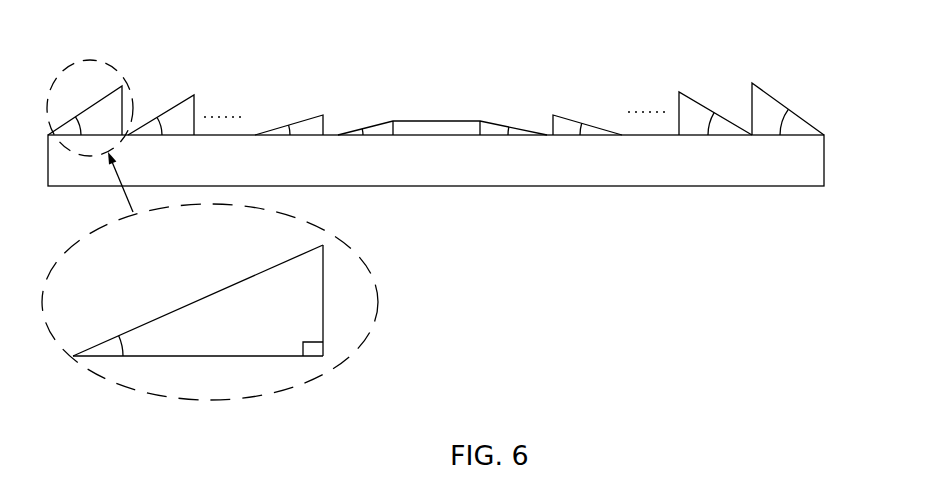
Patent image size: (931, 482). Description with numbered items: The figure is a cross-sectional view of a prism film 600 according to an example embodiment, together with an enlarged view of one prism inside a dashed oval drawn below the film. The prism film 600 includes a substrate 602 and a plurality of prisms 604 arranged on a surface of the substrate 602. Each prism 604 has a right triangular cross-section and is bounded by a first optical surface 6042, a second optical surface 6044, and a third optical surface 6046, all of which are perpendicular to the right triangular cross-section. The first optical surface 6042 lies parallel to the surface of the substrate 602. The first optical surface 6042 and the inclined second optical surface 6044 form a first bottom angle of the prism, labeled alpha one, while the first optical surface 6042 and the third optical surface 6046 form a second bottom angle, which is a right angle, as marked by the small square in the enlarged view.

The prism film 600 is at (167, 47).
The substrate 602 is at (748, 186).
The prism 604 is at (688, 103).
The first optical surface 6042 is at (217, 358).
The second optical surface 6044 is at (213, 295).
The third optical surface 6046 is at (323, 310).